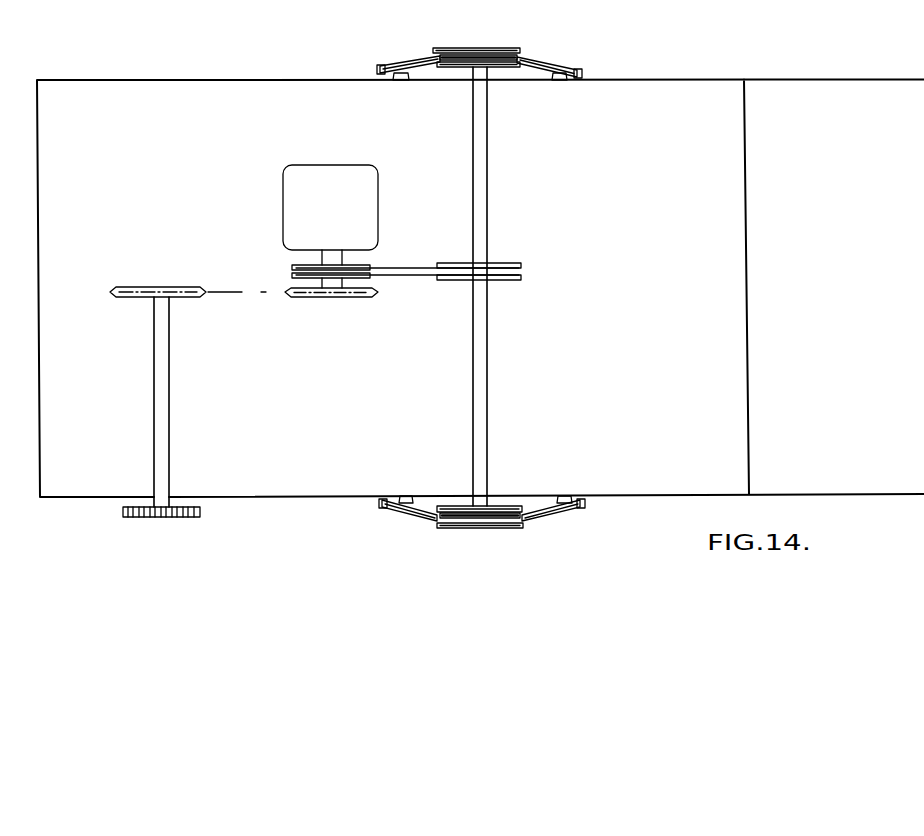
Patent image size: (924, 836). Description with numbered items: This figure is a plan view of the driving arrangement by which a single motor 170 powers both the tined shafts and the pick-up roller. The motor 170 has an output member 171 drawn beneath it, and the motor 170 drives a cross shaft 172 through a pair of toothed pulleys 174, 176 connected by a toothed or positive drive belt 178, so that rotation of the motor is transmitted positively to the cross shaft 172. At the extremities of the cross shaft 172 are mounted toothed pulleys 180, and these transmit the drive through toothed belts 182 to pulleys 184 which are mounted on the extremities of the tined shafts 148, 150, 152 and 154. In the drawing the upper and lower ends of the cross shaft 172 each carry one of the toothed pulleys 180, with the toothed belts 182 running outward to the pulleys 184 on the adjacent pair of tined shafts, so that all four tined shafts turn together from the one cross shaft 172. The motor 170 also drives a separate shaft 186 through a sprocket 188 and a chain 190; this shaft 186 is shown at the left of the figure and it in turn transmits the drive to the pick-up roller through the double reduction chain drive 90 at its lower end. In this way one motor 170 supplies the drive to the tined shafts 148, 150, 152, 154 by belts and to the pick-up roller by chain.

The double reduction chain drive 90 is at (185, 519).
The tined shaft 148 is at (400, 75).
The tined shaft 150 is at (402, 495).
The tined shaft 152 is at (553, 75).
The tined shaft 154 is at (562, 495).
The motor 170 is at (297, 187).
The motor output shaft 171 is at (335, 298).
The cross shaft 172 is at (483, 363).
The toothed pulley 174 is at (292, 267).
The toothed pulley 176 is at (500, 263).
The toothed or positive drive belt 178 is at (413, 262).
The toothed pulley 180 is at (482, 48).
The toothed belt 182 is at (418, 55).
The pulley 184 is at (378, 65).
The shaft 186 is at (165, 440).
The sprocket 188 is at (163, 285).
The chain 190 is at (232, 293).